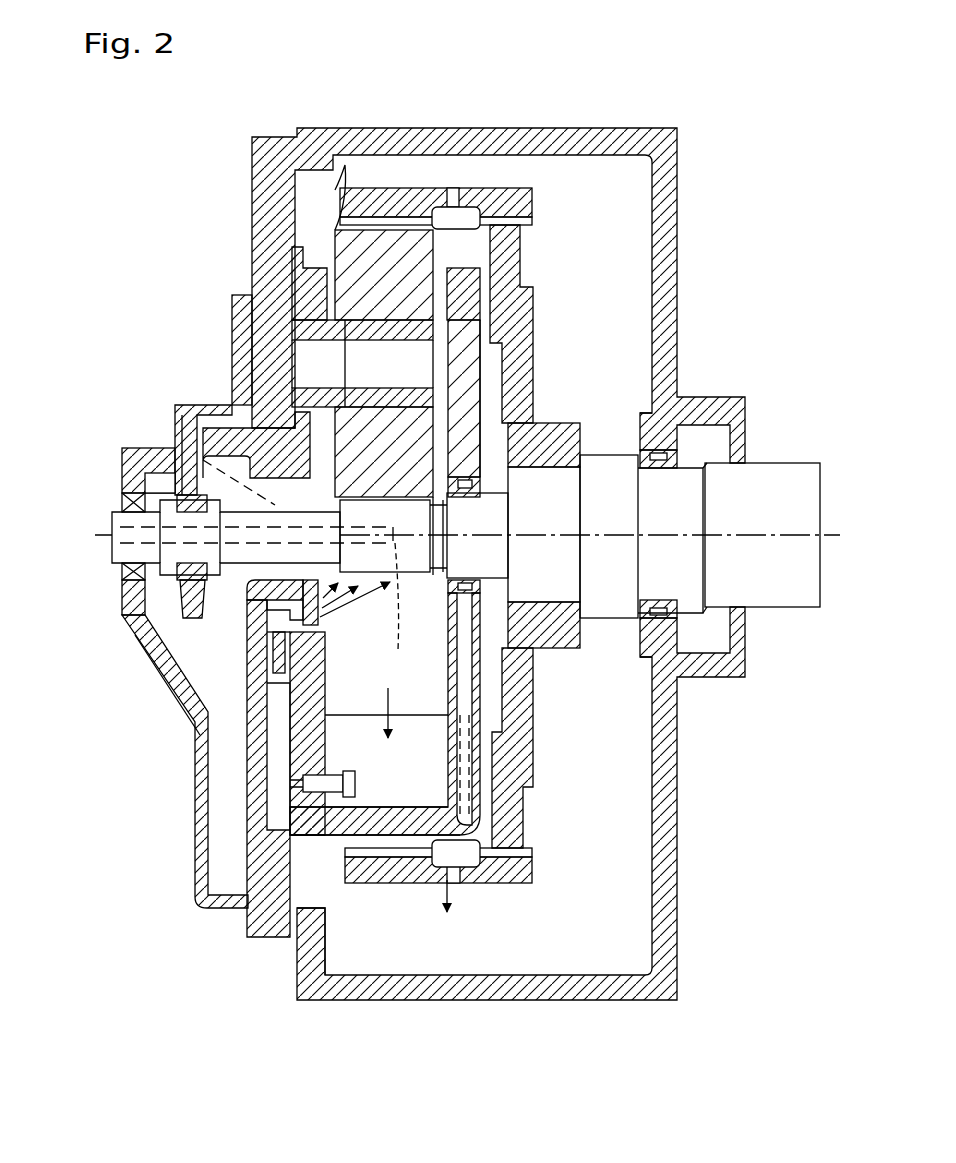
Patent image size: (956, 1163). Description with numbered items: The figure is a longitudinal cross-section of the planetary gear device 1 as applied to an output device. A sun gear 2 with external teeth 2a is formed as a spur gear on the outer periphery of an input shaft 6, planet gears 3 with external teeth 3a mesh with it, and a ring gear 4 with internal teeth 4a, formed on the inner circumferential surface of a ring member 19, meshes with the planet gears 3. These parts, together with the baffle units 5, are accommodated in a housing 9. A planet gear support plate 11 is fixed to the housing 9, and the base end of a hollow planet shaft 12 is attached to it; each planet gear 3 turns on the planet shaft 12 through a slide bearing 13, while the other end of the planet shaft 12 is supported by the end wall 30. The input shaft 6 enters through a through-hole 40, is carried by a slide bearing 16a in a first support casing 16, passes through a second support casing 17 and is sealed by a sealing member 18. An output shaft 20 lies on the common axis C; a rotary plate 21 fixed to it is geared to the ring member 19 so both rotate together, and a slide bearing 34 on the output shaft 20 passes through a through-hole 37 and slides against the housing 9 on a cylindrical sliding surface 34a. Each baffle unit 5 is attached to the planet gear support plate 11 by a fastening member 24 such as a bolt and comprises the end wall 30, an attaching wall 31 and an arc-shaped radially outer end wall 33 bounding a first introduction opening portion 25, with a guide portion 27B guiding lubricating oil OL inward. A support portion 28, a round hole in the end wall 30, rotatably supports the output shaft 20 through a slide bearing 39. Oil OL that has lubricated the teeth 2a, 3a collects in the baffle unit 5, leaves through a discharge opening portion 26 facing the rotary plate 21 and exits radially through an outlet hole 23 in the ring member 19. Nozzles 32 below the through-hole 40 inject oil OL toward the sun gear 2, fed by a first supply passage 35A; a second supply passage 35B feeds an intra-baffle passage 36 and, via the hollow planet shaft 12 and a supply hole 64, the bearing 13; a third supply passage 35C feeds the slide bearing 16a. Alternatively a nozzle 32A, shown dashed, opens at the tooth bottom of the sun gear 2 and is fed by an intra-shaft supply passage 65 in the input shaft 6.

The planetary gear device 1 is at (548, 238).
The sun gear 2 is at (400, 497).
The external teeth 2a is at (395, 550).
The planet gears 3 is at (350, 240).
The external teeth 3a is at (345, 235).
The ring gear 4 is at (400, 215).
The internal teeth 4a is at (372, 215).
The baffle unit 5 is at (330, 843).
The input shaft 6 is at (175, 650).
The housing 9 is at (677, 797).
The planet gear support plate 11 is at (305, 285).
The planet shaft 12 is at (465, 327).
The slide bearing 13 is at (292, 322).
The first support casing 16 is at (122, 597).
The slide bearing 16a is at (135, 548).
The second support casing 17 is at (122, 620).
The sealing member 18 is at (122, 503).
The ring member 19 is at (410, 200).
The output shaft 20 is at (775, 485).
The rotary plate 21 is at (535, 332).
The outlet hole 23 is at (455, 205).
The fastening member 24 is at (300, 945).
The first introduction opening portion 25 is at (455, 705).
The discharge opening portion 26 is at (472, 765).
The guide portion 27B is at (480, 767).
The support portion 28 is at (510, 603).
The end wall 30 is at (452, 720).
The attaching wall 31 is at (332, 797).
The nozzles 32 is at (318, 622).
The nozzle 32A is at (364, 631).
The radially outer end wall 33 is at (423, 828).
The slide bearing 34 is at (678, 452).
The cylindrical sliding surface 34a is at (687, 447).
The first supply passage 35A is at (278, 725).
The second supply passage 35B is at (297, 745).
The third supply passage 35C is at (205, 420).
The intra-baffle passage 36 is at (397, 808).
The through-hole 37 is at (678, 600).
The slide bearing 39 is at (468, 580).
The through-hole 40 is at (240, 556).
The supply hole 64 is at (340, 325).
The intra-shaft supply passage 65 is at (180, 470).
The lubricating oil OL is at (432, 935).
The axis C is at (790, 535).